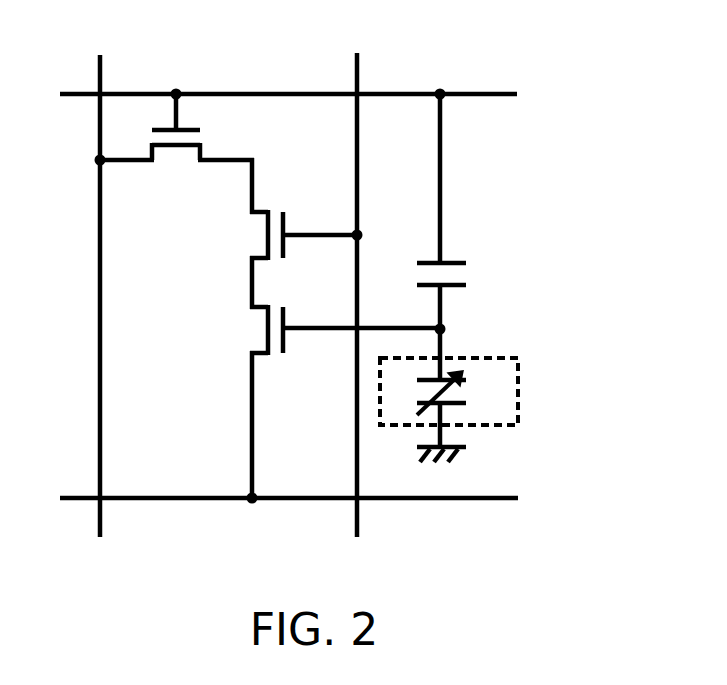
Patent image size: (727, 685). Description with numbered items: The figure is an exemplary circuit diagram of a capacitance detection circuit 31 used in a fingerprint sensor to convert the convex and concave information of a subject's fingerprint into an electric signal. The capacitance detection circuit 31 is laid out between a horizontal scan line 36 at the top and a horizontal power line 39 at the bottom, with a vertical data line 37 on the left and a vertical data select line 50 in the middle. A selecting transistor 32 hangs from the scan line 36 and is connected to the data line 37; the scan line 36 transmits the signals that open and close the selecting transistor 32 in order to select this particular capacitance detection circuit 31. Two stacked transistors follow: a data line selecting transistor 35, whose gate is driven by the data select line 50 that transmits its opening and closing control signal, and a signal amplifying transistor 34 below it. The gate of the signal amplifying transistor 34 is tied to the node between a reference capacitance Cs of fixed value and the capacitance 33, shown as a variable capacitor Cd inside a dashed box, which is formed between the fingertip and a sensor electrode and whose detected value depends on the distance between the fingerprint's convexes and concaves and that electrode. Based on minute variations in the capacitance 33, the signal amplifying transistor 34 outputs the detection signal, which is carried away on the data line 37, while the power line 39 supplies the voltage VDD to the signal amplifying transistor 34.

The capacitance detection circuit 31 is at (566, 48).
The selecting transistor 32 is at (178, 163).
The capacitance 33 is at (500, 357).
The signal amplifying transistor 34 is at (265, 328).
The data line selecting transistor 35 is at (265, 240).
The scan line 36 is at (490, 93).
The data line 37 is at (98, 75).
The power line 39 is at (477, 500).
The data select line 50 is at (355, 73).